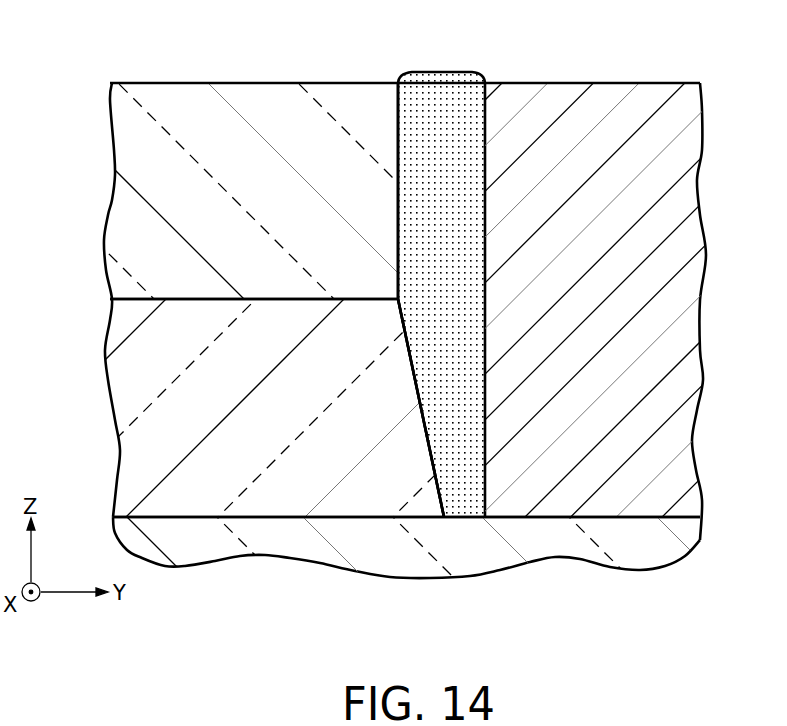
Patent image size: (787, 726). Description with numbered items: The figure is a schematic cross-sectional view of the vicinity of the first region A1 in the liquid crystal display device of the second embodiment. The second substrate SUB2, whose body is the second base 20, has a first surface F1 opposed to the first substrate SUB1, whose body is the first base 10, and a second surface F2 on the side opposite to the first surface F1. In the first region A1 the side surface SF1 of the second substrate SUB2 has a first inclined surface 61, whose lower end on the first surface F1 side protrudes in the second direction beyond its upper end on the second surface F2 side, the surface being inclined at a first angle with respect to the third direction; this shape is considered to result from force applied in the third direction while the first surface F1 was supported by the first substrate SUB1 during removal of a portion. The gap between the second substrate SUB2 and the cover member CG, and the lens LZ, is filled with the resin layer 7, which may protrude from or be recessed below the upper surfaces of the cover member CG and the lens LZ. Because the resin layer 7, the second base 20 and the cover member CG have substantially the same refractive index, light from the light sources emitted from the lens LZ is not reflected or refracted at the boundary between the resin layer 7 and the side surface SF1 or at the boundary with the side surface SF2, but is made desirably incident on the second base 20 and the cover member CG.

The first region A1 is at (321, 73).
The resin layer 7 is at (439, 80).
The side surface SF2 is at (406, 175).
The side surface SF1 is at (415, 336).
The first inclined surface 61 is at (430, 445).
The cover member CG is at (108, 213).
The second surface F2 is at (188, 291).
The first surface F1 is at (178, 528).
The lens LZ is at (702, 310).
The second substrate SUB2 is at (108, 368).
The second base 20 is at (211, 354).
The first substrate SUB1 is at (305, 553).
The first base 10 is at (406, 584).